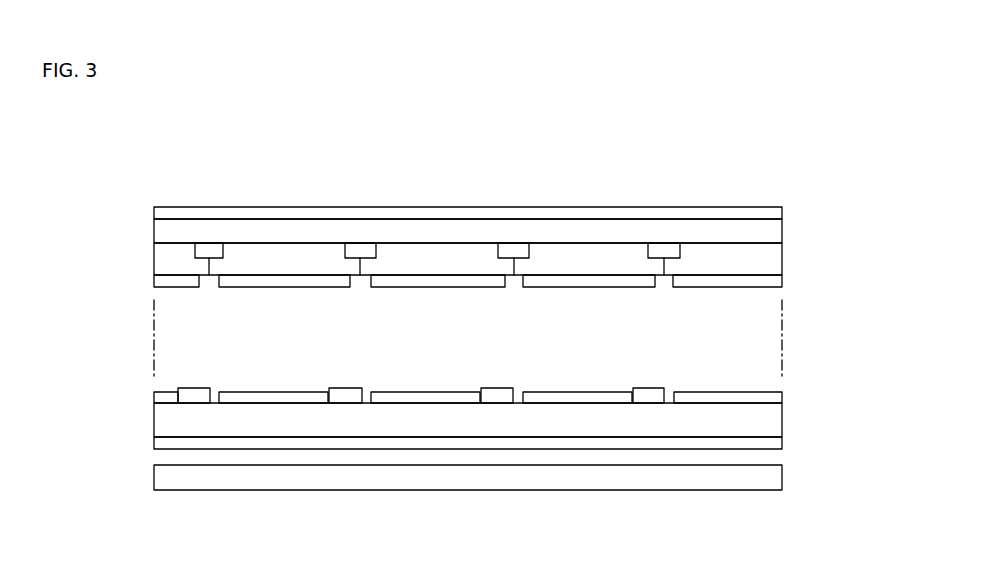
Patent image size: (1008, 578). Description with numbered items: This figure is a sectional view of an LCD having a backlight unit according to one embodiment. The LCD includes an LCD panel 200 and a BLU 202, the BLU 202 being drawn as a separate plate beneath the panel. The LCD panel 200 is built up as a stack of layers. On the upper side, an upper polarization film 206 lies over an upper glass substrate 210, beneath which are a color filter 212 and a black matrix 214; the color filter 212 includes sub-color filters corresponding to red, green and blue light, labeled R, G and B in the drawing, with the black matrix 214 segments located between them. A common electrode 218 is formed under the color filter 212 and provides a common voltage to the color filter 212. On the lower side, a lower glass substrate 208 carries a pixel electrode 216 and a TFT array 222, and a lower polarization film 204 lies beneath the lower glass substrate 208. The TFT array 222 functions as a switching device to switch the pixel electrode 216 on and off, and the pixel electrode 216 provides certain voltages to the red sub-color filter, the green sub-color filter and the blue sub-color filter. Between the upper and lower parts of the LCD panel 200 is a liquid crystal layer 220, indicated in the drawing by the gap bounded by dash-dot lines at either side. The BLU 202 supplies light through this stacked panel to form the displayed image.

The LCD panel 200 is at (661, 196).
The BLU 202 is at (158, 477).
The lower polarization film 204 is at (776, 443).
The upper polarization film 206 is at (208, 212).
The lower glass substrate 208 is at (776, 420).
The upper glass substrate 210 is at (328, 228).
The color filter 212 is at (258, 250).
The black matrix 214 is at (515, 252).
The pixel electrode 216 is at (257, 392).
The common electrode 218 is at (231, 289).
The liquid crystal layer 220 is at (775, 342).
The TFT array 222 is at (193, 392).